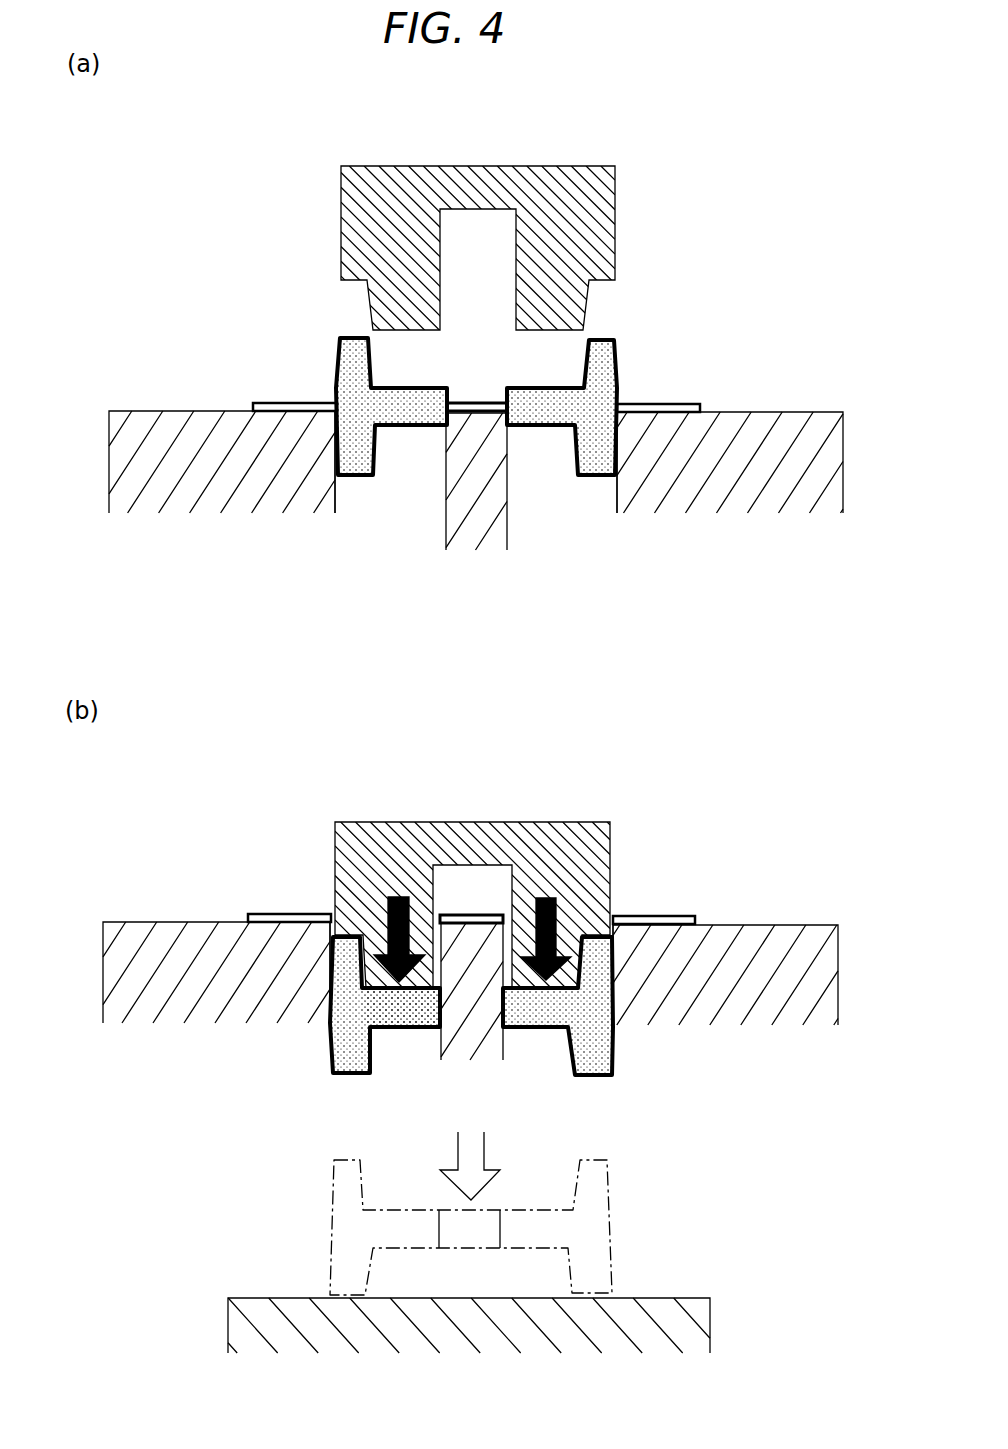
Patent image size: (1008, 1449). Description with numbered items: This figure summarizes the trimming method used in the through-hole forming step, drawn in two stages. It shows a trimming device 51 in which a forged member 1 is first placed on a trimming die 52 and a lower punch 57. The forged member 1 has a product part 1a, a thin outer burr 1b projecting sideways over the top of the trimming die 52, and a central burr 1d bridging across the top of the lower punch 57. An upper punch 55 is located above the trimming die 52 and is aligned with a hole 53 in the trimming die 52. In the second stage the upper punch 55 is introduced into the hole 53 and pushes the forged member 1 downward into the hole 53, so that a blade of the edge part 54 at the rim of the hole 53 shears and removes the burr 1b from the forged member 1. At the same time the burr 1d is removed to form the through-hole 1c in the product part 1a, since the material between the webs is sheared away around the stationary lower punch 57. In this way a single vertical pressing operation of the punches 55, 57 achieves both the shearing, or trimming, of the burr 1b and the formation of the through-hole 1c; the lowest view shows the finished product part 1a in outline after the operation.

The forged member 1 is at (625, 352).
The product part 1a is at (348, 362).
The burr 1b is at (288, 403).
The through-hole 1c is at (438, 1005).
The burr 1d is at (477, 403).
The trimming device 51 is at (768, 251).
The trimming die 52 is at (807, 412).
The hole 53 is at (617, 487).
The edge part 54 is at (615, 927).
The punch 55 is at (360, 209).
The punch 57 is at (455, 478).